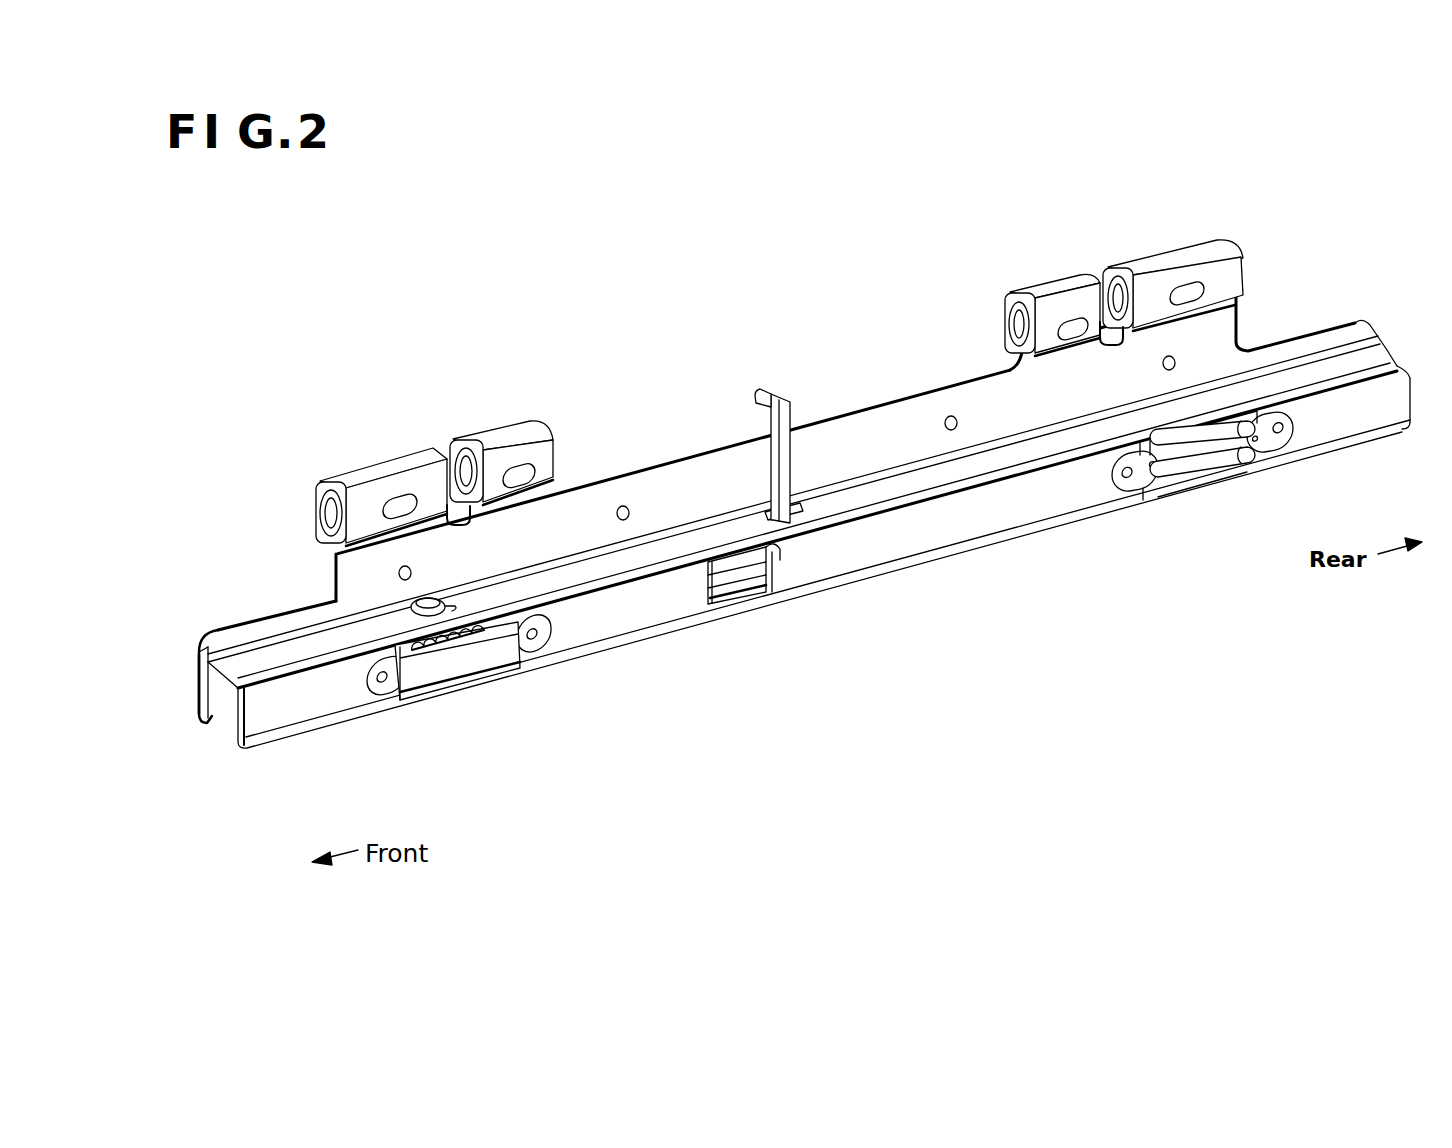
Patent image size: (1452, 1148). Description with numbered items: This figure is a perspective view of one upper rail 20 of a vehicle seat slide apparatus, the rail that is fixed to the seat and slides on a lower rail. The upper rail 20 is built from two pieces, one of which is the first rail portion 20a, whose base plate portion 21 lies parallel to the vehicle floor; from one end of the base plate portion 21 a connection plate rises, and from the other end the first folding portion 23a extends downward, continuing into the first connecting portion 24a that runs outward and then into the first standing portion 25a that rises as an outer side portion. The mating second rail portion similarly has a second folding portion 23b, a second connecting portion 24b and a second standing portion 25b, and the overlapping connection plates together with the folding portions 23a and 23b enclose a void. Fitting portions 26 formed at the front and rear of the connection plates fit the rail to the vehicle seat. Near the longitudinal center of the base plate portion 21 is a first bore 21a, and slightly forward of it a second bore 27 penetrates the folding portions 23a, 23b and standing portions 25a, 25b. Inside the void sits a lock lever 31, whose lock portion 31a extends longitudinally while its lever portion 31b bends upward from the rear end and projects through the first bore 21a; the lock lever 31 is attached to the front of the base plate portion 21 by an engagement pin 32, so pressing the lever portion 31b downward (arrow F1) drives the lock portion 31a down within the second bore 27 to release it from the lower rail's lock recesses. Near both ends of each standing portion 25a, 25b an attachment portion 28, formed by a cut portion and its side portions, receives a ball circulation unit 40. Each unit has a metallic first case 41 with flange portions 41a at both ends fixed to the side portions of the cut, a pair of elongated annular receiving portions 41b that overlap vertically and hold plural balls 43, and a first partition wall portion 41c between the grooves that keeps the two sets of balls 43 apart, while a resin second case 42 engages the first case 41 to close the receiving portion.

The upper rail 20 is at (793, 510).
The first rail portion 20a is at (925, 553).
The base plate portion 21 is at (1372, 358).
The first bore 21a is at (770, 510).
The first folding portion 23a is at (238, 754).
The second folding portion 23b is at (218, 688).
The first connecting portion 24a is at (255, 747).
The second connecting portion 24b is at (205, 724).
The first standing portion 25a is at (668, 605).
The second standing portion 25b is at (199, 656).
The fitting portion 26 is at (500, 428).
The second bore 27 is at (744, 576).
The attachment portion 28 is at (1140, 432).
The lock lever 31 is at (791, 430).
The lock portion 31a is at (735, 565).
The lever portion 31b is at (790, 455).
The engagement pin 32 is at (430, 603).
The ball circulation unit 40 is at (827, 582).
The first case 41 is at (827, 582).
The flange portion 41a is at (368, 684).
The annular receiving portion 41b is at (1185, 448).
The first partition wall portion 41c is at (1222, 465).
The second case 42 is at (505, 660).
The ball 43 is at (462, 650).